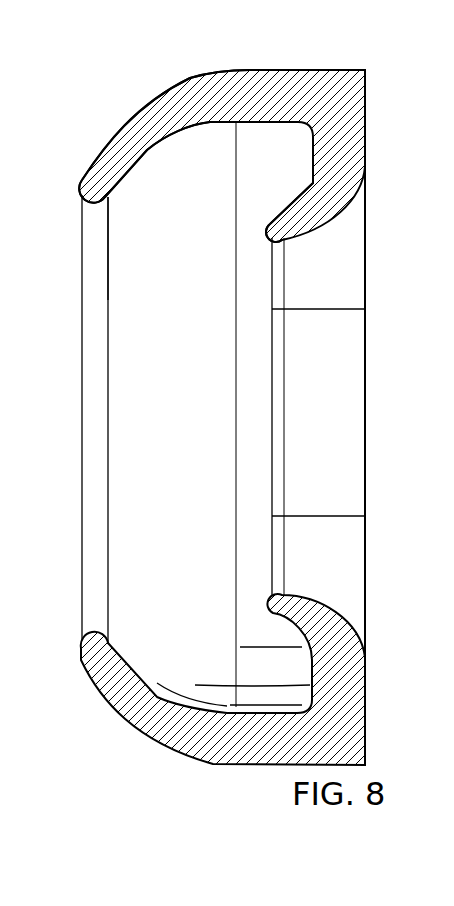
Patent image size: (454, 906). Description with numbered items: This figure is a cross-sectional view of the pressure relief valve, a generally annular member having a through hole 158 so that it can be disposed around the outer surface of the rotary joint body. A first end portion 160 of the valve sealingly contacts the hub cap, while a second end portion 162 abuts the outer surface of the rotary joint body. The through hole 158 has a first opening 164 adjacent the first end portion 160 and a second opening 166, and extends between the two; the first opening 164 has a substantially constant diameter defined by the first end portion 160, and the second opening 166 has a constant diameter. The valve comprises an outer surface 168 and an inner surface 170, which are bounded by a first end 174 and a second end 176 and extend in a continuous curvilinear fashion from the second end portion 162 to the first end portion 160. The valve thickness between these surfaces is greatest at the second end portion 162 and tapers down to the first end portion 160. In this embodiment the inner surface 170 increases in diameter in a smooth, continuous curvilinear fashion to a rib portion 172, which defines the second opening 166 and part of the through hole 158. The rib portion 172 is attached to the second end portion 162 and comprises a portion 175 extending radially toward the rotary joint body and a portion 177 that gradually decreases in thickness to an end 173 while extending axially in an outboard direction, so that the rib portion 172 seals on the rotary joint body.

The through hole 158 is at (179, 435).
The first end portion 160 is at (96, 158).
The second end portion 162 is at (340, 70).
The first opening 164 is at (101, 200).
The second opening 166 is at (367, 165).
The outer surface 168 is at (193, 78).
The inner surface 170 is at (148, 153).
The rib portion 172 is at (367, 130).
The end of the rib portion 173 is at (270, 232).
The first end 174 is at (84, 195).
The radially extending portion 175 is at (367, 107).
The second end 176 is at (367, 88).
The axially extending portion 177 is at (306, 200).